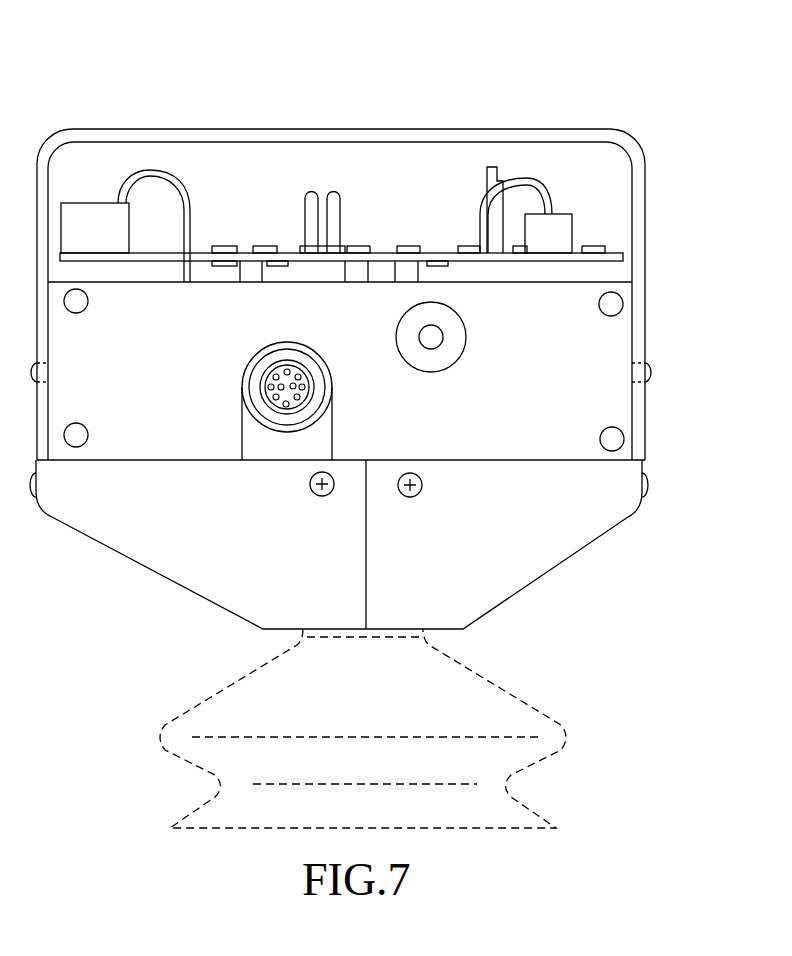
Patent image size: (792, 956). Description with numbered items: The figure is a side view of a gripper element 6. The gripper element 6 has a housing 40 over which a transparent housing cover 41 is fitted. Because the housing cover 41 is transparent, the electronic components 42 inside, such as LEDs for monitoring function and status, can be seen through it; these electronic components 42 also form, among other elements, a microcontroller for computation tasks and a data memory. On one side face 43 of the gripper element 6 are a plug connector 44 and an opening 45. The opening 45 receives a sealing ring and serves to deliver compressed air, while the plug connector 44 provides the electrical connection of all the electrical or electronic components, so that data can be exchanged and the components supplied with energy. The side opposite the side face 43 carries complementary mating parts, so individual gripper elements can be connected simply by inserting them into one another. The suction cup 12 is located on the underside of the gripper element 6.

The gripper element 6 is at (151, 109).
The suction cup 12 is at (552, 722).
The housing 40 is at (651, 329).
The housing cover 41 is at (405, 138).
The electronic components 42 is at (583, 234).
The side face 43 is at (611, 379).
The plug connector 44 is at (275, 412).
The opening 45 is at (457, 360).